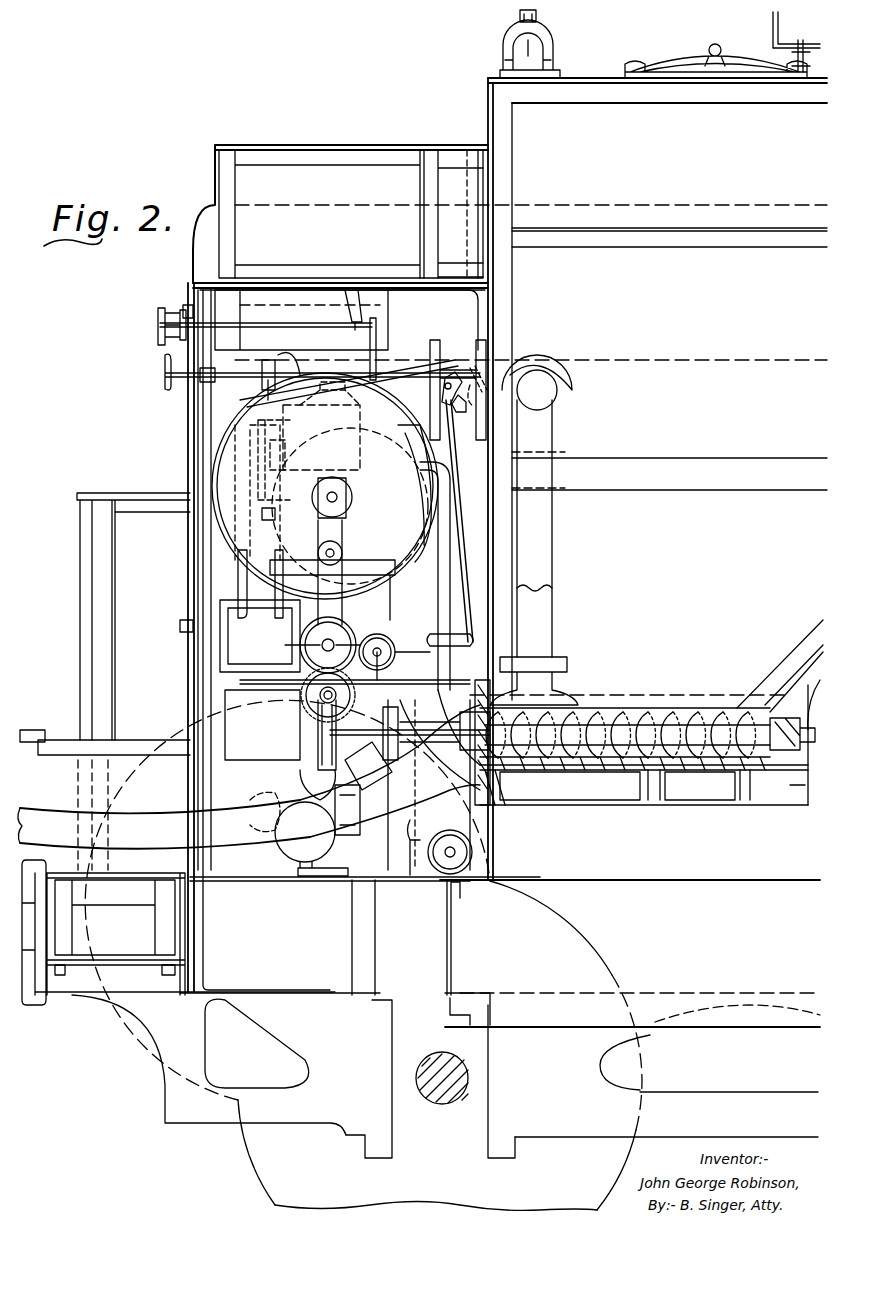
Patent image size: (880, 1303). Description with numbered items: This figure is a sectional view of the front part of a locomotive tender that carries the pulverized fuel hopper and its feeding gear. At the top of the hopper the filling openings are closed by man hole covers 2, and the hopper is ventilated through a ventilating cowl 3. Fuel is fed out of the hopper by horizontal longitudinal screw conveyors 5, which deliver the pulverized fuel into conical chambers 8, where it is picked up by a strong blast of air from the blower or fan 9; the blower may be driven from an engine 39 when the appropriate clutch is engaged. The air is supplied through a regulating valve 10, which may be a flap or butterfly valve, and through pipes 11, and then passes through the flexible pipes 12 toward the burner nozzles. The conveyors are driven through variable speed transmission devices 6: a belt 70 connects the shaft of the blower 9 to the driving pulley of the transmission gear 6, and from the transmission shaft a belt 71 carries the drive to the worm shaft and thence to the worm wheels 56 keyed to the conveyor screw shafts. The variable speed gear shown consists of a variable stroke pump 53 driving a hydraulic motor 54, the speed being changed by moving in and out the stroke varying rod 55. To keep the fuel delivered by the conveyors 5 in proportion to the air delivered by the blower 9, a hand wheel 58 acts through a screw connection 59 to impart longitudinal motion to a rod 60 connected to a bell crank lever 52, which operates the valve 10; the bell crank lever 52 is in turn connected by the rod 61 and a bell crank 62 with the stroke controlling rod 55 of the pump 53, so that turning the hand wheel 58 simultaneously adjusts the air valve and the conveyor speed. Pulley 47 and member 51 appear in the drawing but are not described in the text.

The man hole covers 2 is at (705, 62).
The ventilating cowl 3 is at (545, 38).
The screw conveyors 5 is at (650, 735).
The variable speed transmission devices 6 is at (310, 694).
The conical chambers 8 is at (482, 813).
The blower or fan 9 is at (235, 452).
The regulating valve 10 is at (470, 372).
The pipes 11 is at (552, 518).
The flexible pipes 12 is at (130, 835).
The engine 39 is at (300, 415).
The pulley 47 is at (235, 548).
The motor 51 is at (372, 450).
The bell crank lever 52 is at (440, 385).
The variable stroke pump 53 is at (375, 645).
The hydraulic motor 54 is at (318, 660).
The stroke varying rod 55 is at (420, 620).
The worm wheels 56 is at (305, 776).
The hand wheel 58 is at (165, 366).
The screw connection 59 is at (202, 352).
The rod 60 is at (398, 375).
The rod 61 is at (450, 455).
The bell crank 62 is at (480, 640).
The belt 70 is at (240, 590).
The belt 71 is at (240, 682).